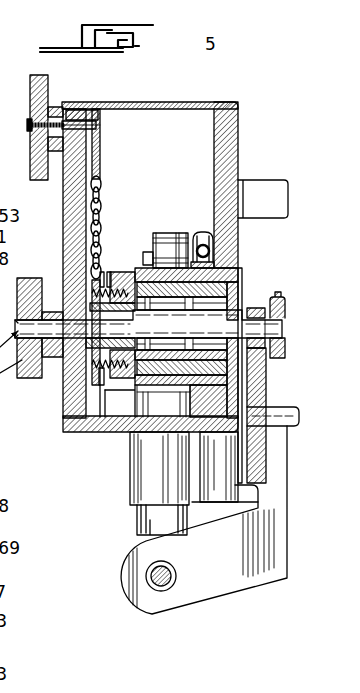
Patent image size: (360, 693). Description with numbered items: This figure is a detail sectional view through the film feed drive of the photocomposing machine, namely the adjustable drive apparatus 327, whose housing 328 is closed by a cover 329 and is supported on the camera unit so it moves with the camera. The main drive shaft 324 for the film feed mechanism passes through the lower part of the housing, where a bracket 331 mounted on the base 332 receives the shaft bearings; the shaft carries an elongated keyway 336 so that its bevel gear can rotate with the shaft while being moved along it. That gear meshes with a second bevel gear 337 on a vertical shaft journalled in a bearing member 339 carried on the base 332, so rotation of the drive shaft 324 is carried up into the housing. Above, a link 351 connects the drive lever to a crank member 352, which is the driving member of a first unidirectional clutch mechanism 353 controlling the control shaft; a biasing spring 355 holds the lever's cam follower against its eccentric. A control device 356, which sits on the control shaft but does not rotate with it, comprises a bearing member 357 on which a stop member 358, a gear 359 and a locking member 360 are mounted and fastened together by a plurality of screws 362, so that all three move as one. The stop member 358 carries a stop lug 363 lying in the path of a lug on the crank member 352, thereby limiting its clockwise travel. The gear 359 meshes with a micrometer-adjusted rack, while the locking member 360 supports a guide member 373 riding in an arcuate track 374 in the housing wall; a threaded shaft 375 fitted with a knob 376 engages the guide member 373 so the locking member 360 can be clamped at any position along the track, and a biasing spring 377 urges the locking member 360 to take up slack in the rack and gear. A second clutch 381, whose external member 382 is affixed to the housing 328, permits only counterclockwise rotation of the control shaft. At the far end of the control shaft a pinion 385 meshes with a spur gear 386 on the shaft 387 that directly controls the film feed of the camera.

The main drive shaft 324 is at (160, 587).
The adjustable drive apparatus 327 is at (216, 92).
The housing 328 is at (231, 142).
The cover 329 is at (150, 102).
The bracket 331 is at (258, 582).
The base 332 is at (104, 423).
The elongated keyway 336 is at (172, 562).
The second bevel gear 337 is at (130, 551).
The bearing member 339 is at (137, 481).
The link 351 is at (163, 240).
The crank member 352 is at (150, 233).
The first unidirectional clutch mechanism 353 is at (182, 371).
The biasing spring 355 is at (211, 257).
The control device 356 is at (99, 401).
The bearing member 357 is at (73, 361).
The stop member 358 is at (108, 272).
The gear 359 is at (112, 270).
The locking member 360 is at (100, 160).
The screws 362 is at (90, 291).
The stop lug 363 is at (110, 392).
The guide member 373 is at (102, 125).
The arcuate track 374 is at (78, 118).
The threaded shaft 375 is at (27, 126).
The knob 376 is at (30, 90).
The biasing spring 377 is at (103, 196).
The second clutch 381 is at (221, 303).
The external member 382 is at (248, 372).
The pinion 385 is at (258, 308).
The spur gear 386 is at (268, 368).
The shaft 387 is at (287, 428).